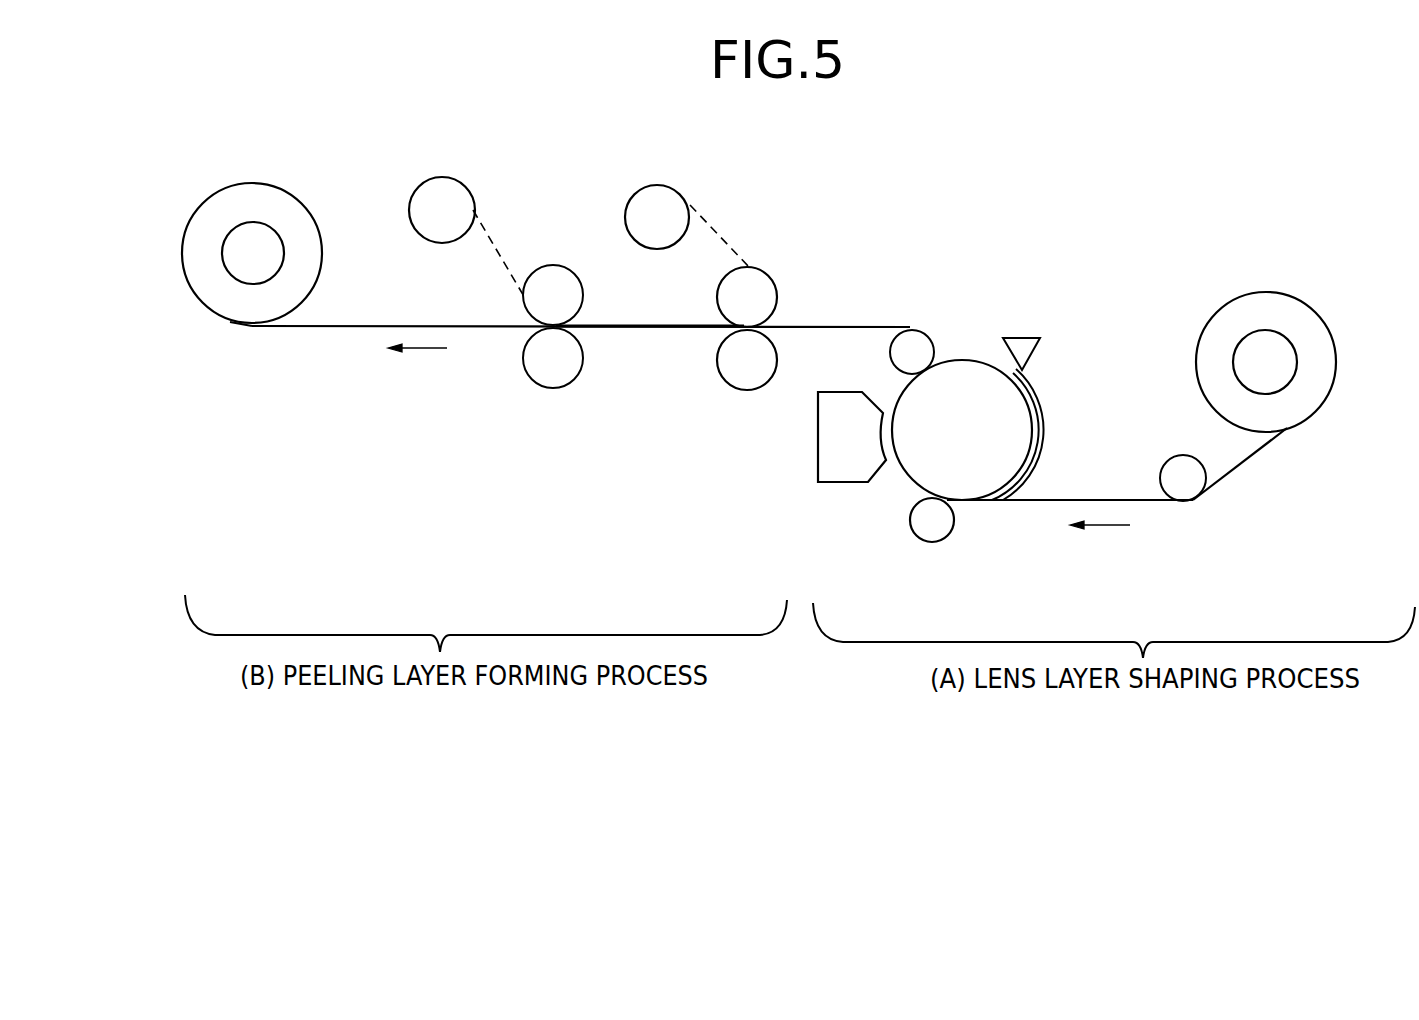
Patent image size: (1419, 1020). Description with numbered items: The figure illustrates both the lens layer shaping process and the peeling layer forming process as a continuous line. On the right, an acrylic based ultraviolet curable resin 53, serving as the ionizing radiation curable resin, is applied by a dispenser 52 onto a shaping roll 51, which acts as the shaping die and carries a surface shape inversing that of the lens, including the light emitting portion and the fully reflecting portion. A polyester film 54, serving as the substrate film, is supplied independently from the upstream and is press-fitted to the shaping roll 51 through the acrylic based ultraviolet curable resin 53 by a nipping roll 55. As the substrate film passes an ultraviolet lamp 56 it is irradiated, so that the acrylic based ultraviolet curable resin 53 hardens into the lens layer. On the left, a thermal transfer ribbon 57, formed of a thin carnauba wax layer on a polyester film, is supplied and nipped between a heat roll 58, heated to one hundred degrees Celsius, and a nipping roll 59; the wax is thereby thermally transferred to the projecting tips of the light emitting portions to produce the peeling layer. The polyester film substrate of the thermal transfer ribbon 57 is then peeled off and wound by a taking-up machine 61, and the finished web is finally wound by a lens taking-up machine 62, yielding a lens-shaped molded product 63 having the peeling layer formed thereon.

The shaping roll 51 is at (918, 458).
The dispenser 52 is at (1022, 348).
The acrylic based ultraviolet curable resin 53 is at (1040, 420).
The polyester film 54 is at (1250, 457).
The nipping roll 55 is at (932, 524).
The ultraviolet lamp 56 is at (832, 448).
The thermal transfer ribbon 57 is at (722, 228).
The heat roll 58 is at (750, 296).
The nipping roll 59 is at (742, 367).
The taking-up machine 61 is at (442, 202).
The lens taking-up machine 62 is at (250, 252).
The lens-shaped molded product 63 is at (225, 305).